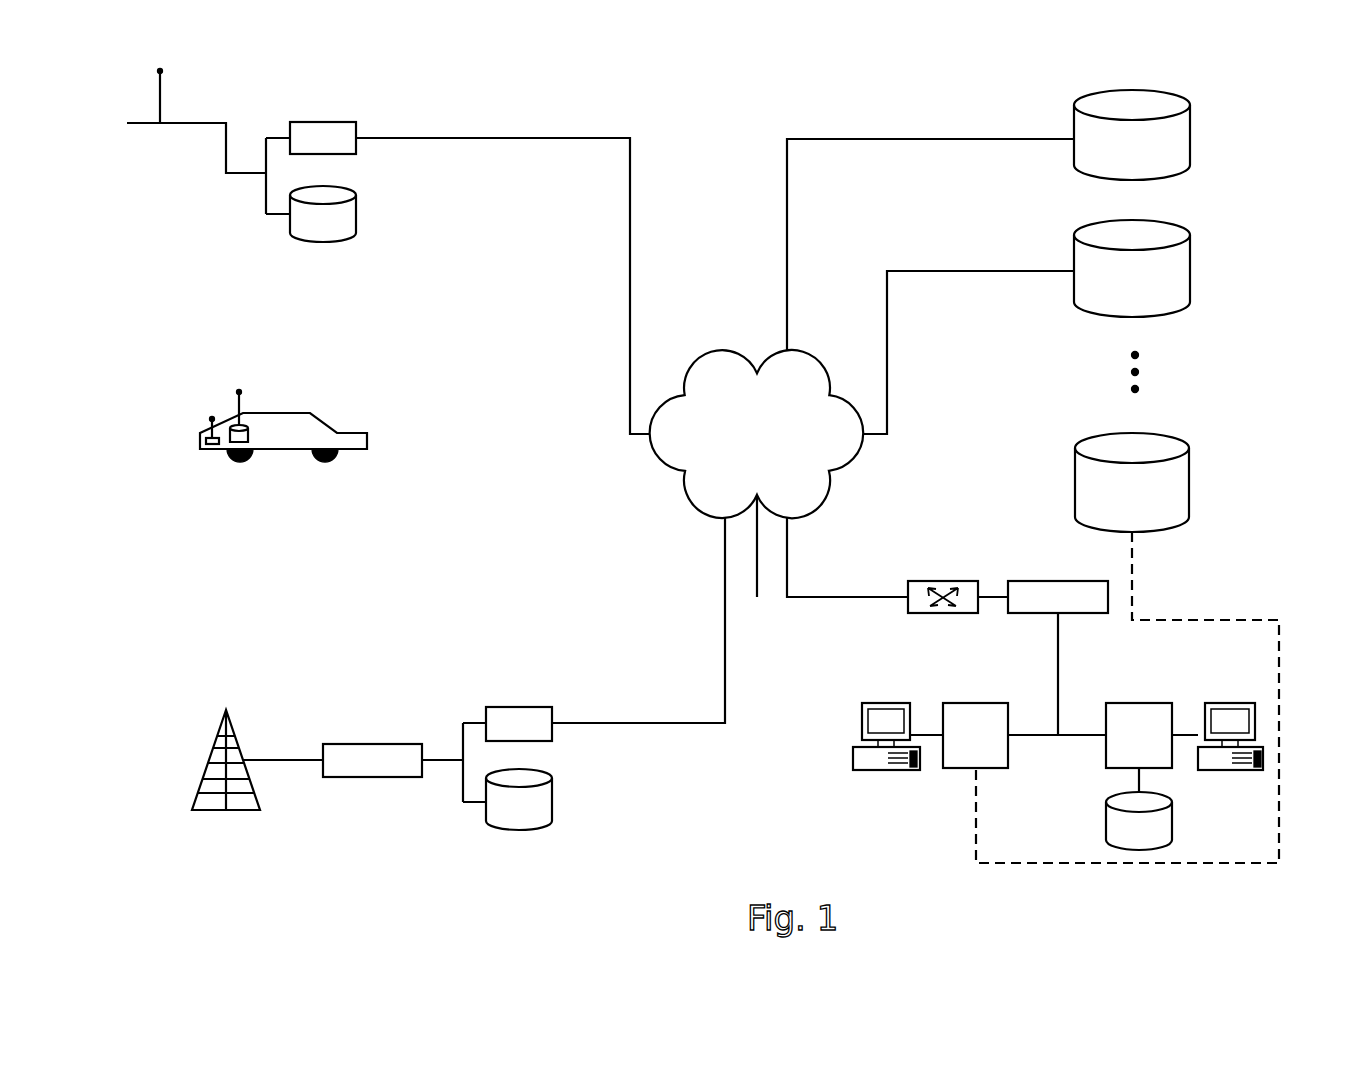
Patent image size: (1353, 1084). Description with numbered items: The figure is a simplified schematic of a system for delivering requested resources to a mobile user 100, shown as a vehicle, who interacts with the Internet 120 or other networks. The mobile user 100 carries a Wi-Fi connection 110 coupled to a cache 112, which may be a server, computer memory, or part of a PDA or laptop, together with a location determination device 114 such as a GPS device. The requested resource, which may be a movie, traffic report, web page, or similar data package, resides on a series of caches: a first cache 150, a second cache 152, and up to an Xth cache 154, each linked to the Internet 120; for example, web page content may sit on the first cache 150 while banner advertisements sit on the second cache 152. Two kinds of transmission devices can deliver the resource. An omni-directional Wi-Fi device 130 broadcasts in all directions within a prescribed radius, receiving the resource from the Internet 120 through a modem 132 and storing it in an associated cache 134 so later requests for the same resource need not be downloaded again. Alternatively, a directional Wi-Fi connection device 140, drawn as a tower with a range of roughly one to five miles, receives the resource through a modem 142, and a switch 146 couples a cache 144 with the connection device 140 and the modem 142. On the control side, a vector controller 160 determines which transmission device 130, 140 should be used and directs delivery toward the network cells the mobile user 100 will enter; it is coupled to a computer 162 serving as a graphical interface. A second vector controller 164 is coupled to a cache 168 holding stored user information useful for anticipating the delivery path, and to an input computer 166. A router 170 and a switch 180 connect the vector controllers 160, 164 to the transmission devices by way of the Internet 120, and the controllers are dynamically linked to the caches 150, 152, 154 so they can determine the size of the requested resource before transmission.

The mobile user 100 is at (320, 411).
The Wi-Fi connection 110 is at (237, 392).
The cache 112 is at (249, 436).
The location determination device 114 is at (210, 447).
The Internet 120 is at (757, 434).
The omni-directional Wi-Fi device 130 is at (163, 99).
The modem 132 is at (323, 122).
The cache 134 is at (323, 214).
The directional Wi-Fi connection device 140 is at (237, 735).
The modem 142 is at (520, 707).
The cache 144 is at (519, 799).
The switch 146 is at (340, 744).
The first cache 150 is at (1074, 153).
The second cache 152 is at (1074, 287).
The Xth cache 154 is at (1075, 482).
The vector controller 160 is at (975, 735).
The computer 162 is at (853, 757).
The vector controller 164 is at (1139, 735).
The computer 166 is at (1230, 703).
The cache 168 is at (1139, 821).
The router 170 is at (955, 581).
The switch 180 is at (1085, 581).